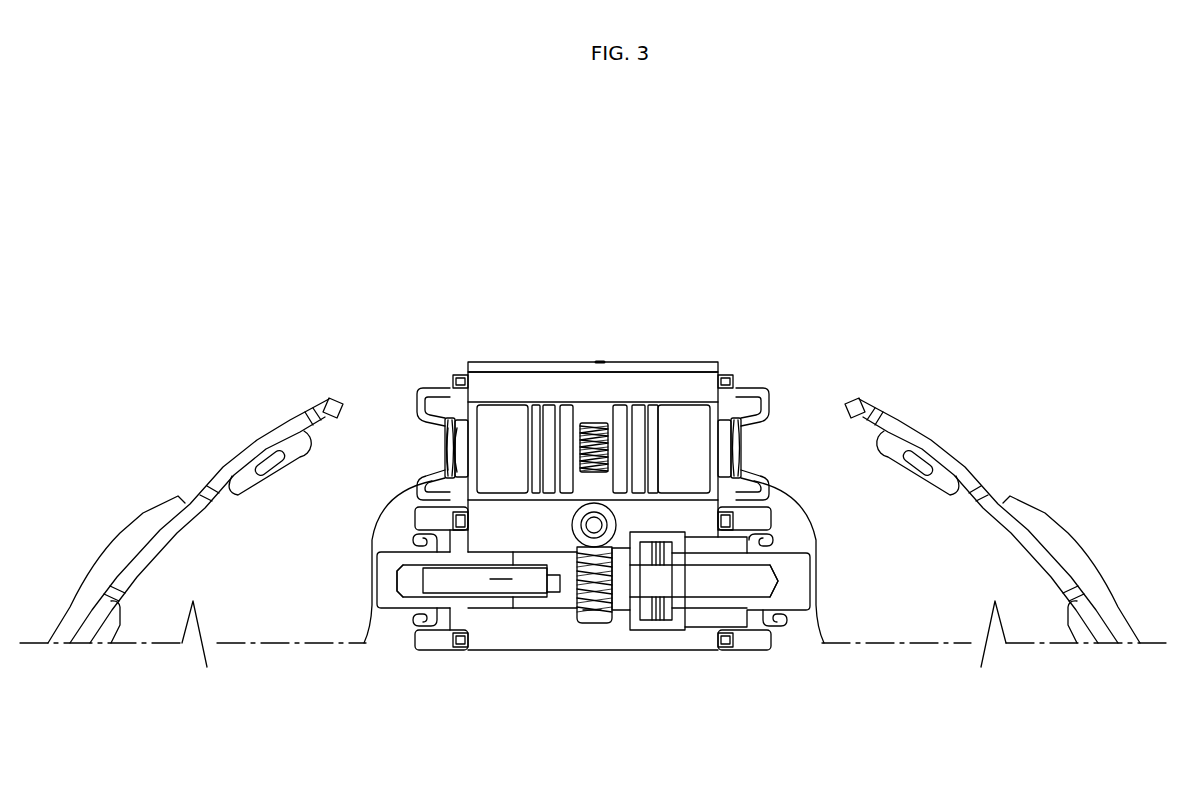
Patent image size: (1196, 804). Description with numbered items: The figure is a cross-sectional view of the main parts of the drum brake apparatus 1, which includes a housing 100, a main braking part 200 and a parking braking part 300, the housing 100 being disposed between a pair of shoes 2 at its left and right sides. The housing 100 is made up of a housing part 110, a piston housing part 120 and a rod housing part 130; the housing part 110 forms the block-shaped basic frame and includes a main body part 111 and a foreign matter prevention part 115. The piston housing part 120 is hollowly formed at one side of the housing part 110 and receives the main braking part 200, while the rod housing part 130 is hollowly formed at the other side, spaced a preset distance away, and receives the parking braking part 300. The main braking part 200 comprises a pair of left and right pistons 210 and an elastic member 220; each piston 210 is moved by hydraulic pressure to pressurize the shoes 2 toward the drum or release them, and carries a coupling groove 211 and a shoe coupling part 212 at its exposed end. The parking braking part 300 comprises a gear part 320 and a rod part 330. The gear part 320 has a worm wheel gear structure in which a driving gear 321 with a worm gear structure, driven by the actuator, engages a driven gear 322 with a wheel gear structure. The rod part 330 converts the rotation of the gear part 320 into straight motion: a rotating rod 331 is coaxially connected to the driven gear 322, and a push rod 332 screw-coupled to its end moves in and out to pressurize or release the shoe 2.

The drum brake apparatus 1 is at (616, 328).
The shoes 2 is at (260, 612).
The housing 100 is at (630, 407).
The housing part 110 is at (476, 358).
The main body part 111 is at (688, 443).
The foreign matter prevention part 115 is at (736, 382).
The piston housing part 120 is at (600, 412).
The rod housing part 130 is at (503, 578).
The main braking part 200 is at (762, 414).
The piston 210 is at (442, 415).
The coupling groove 211 is at (457, 450).
The shoe coupling part 212 is at (447, 460).
The elastic member 220 is at (607, 430).
The parking braking part 300 is at (591, 633).
The gear part 320 is at (578, 642).
The driving gear 321 is at (573, 538).
The driven gear 322 is at (593, 612).
The rod part 330 is at (579, 657).
The rotating rod 331 is at (477, 590).
The push rod 332 is at (393, 605).